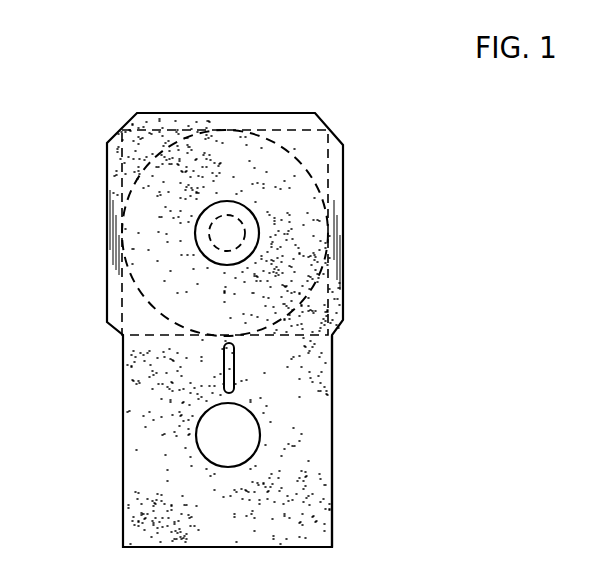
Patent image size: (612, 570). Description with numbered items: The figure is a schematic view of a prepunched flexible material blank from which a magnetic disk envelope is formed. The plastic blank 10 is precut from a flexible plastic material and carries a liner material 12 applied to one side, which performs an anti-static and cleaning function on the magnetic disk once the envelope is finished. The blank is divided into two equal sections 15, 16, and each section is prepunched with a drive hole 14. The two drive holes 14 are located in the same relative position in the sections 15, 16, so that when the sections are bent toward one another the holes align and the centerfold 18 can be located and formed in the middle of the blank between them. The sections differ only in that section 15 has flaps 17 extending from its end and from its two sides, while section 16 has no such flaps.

The key 10 is at (383, 172).
The key body 12 is at (123, 485).
The circular openings 14 is at (255, 249).
The circular recess 15 is at (122, 272).
The lower body portion 16 is at (332, 507).
The beveled edges 17 is at (203, 113).
The slot 18 is at (170, 337).